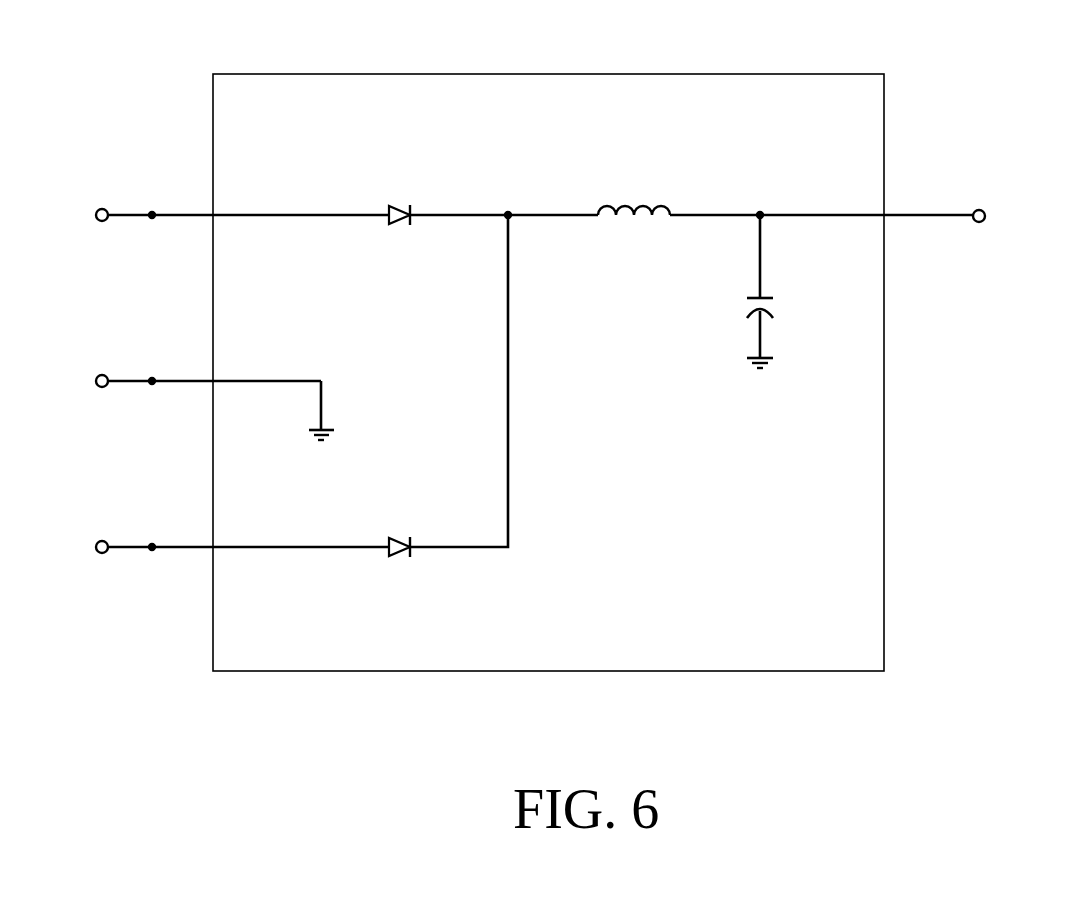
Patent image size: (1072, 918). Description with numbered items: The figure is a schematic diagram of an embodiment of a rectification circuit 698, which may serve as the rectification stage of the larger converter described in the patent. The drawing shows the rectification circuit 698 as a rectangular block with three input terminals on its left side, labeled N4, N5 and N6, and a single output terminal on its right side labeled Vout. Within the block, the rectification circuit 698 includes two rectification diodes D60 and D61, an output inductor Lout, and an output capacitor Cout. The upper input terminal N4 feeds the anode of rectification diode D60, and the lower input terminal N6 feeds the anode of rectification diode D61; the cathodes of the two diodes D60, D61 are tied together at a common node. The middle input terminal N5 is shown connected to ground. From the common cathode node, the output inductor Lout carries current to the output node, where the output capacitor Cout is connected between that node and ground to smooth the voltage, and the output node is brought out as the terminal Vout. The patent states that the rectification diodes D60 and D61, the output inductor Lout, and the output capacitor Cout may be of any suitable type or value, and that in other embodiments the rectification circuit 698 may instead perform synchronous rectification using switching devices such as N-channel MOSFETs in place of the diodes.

The rectification circuit 698 is at (598, 74).
The node N4 is at (152, 212).
The node N5 is at (152, 378).
The node N6 is at (152, 544).
The rectification diode D60 is at (394, 200).
The rectification diode D61 is at (394, 532).
The output inductor Lout is at (634, 228).
The output capacitor Cout is at (783, 291).
The output voltage terminal Vout is at (1002, 217).